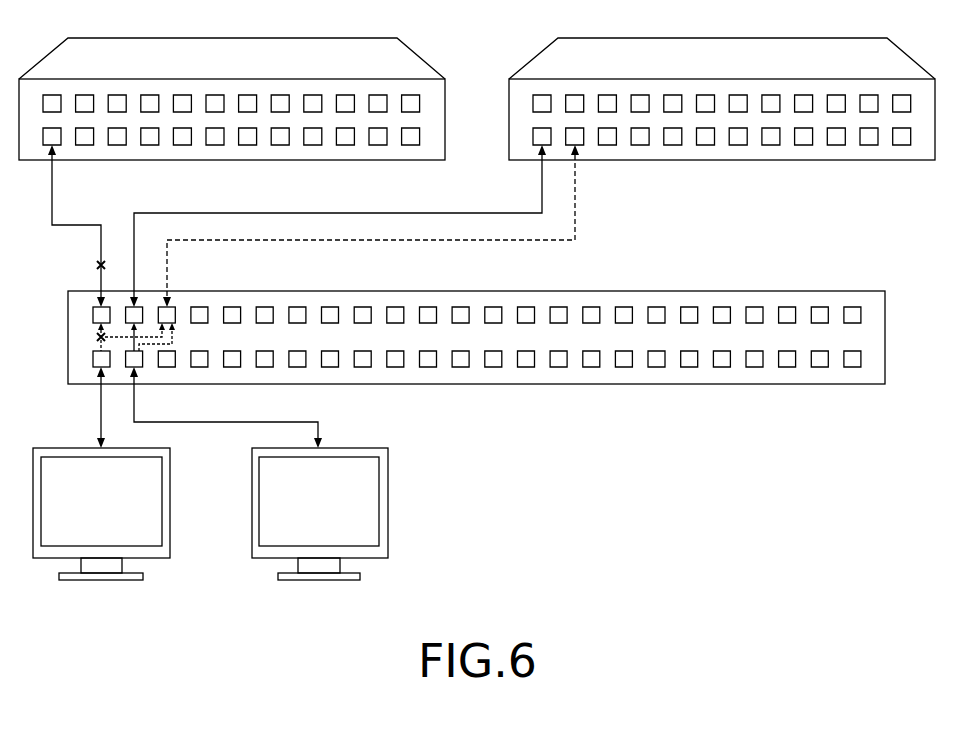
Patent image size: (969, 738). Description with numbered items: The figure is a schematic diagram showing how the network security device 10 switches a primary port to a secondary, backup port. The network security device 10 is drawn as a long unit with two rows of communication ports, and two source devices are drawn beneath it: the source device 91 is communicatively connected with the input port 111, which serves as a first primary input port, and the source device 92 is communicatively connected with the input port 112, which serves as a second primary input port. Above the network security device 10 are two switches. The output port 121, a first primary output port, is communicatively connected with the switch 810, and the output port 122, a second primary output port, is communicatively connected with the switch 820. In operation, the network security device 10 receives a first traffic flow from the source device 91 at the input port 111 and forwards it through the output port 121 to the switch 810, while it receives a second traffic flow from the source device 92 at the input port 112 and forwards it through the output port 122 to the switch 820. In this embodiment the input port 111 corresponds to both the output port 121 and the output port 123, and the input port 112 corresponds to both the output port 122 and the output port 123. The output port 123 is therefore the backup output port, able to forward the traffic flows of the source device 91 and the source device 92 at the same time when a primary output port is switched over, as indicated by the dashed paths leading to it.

The network security device 10 is at (476, 297).
The input port 111 is at (93, 360).
The input port 112 is at (143, 360).
The output port 121 is at (93, 314).
The output port 122 is at (143, 314).
The output port 123 is at (176, 314).
The switch 810 is at (232, 45).
The switch 820 is at (722, 45).
The source device 91 is at (170, 502).
The source device 92 is at (388, 502).